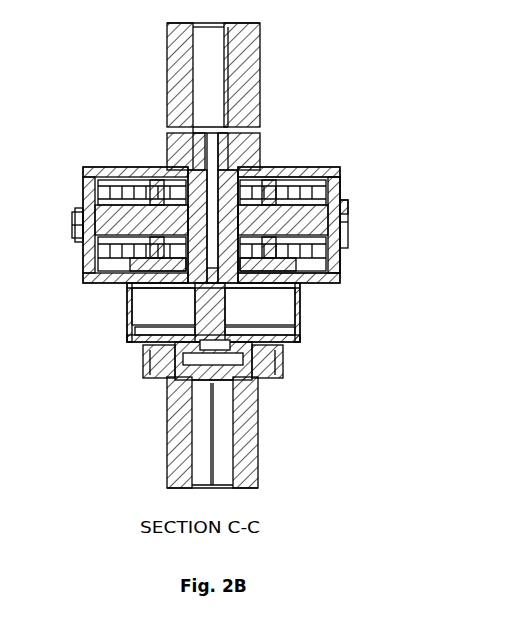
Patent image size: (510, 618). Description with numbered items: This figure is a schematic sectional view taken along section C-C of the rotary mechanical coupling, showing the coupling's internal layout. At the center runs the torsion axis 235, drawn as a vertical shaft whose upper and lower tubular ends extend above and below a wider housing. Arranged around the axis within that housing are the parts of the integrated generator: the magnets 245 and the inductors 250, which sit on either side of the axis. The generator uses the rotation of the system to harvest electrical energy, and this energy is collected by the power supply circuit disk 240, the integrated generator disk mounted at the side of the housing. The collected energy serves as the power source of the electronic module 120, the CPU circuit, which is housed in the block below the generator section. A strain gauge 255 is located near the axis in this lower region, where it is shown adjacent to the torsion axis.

The torsion axis 235 is at (243, 163).
The inductors 250 is at (322, 186).
The magnets 245 is at (343, 220).
The power supply circuit disk 240 is at (72, 225).
The electronic module 120 is at (338, 283).
The strain gauge 255 is at (190, 300).